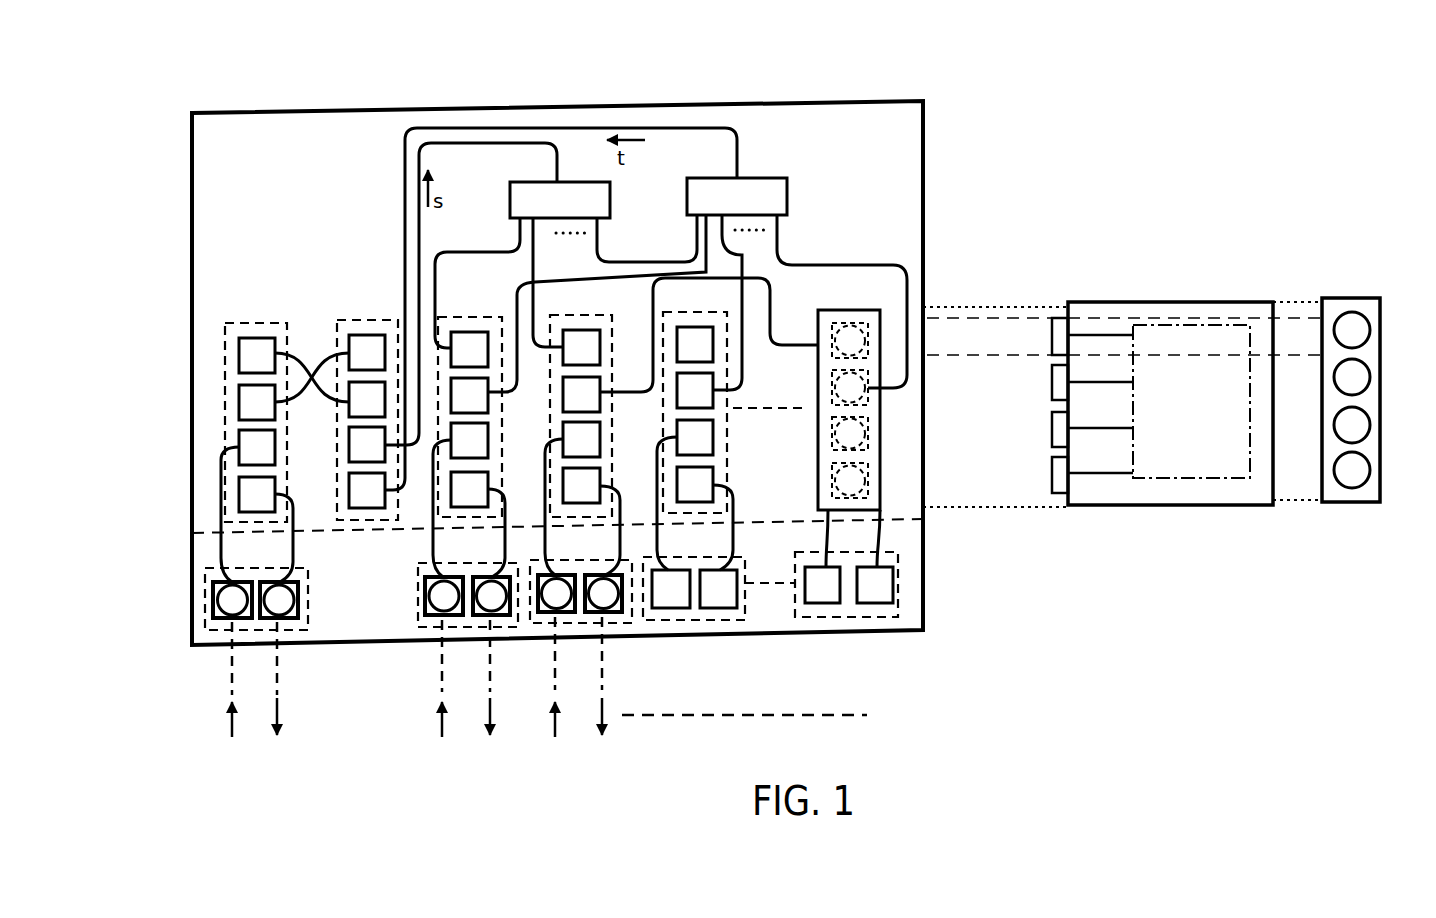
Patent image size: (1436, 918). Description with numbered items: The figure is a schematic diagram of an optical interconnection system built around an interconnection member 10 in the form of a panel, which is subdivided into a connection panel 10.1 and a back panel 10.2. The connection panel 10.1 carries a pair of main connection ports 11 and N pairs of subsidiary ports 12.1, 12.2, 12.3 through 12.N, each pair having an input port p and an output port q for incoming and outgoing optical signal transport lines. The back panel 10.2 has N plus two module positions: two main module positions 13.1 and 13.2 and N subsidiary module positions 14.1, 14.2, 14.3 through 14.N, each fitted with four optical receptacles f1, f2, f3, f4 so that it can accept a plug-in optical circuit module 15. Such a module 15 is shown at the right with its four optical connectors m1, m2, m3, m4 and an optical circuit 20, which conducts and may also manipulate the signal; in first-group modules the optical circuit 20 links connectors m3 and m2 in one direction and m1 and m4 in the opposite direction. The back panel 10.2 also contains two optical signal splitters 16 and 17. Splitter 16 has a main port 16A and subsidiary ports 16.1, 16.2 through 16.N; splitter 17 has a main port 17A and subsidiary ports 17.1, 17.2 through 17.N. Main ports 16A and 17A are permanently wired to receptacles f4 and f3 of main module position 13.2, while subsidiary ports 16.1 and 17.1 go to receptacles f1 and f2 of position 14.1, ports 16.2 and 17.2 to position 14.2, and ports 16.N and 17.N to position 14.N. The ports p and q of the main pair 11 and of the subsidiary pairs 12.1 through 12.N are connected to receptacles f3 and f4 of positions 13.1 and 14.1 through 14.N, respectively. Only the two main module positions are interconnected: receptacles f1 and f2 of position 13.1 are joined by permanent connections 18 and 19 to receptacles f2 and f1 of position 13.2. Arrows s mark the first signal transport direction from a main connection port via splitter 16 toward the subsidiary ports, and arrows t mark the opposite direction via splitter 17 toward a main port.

The interconnection member 10 is at (182, 175).
The connection panel 10.1 is at (205, 562).
The back panel 10.2 is at (220, 283).
The pair of main connection ports 11 is at (297, 633).
The pair of subsidiary ports 12.1 is at (438, 627).
The pair of subsidiary ports 12.2 is at (617, 623).
The pair of subsidiary ports 12.3 is at (687, 620).
The pair of subsidiary ports 12.N is at (812, 620).
The main module position 13.1 is at (225, 415).
The main module position 13.2 is at (360, 520).
The subsidiary module position 14.1 is at (500, 455).
The subsidiary module position 14.2 is at (637, 432).
The subsidiary module position 14.3 is at (727, 433).
The subsidiary module position 14.N is at (816, 322).
The plug-in optical circuit module 15 is at (1160, 302).
The optical signal splitter 16 is at (508, 198).
The optical signal splitter 17 is at (788, 190).
The main port of signal splitter 16A is at (512, 140).
The main port of signal splitter 17A is at (680, 125).
The subsidiary port of signal splitter 16.1 is at (487, 251).
The subsidiary port of signal splitter 16.2 is at (528, 269).
The subsidiary port of signal splitter 16.N is at (600, 262).
The subsidiary port of signal splitter 17.1 is at (693, 252).
The subsidiary port of signal splitter 17.2 is at (657, 302).
The subsidiary port of signal splitter 17.N is at (807, 251).
The permanent optical signal connection 18 is at (302, 357).
The permanent optical signal connection 19 is at (298, 402).
The optical circuit 20 is at (1170, 480).
The optical receptacle f1 is at (238, 353).
The optical receptacle f2 is at (238, 397).
The optical receptacle f3 is at (238, 442).
The optical receptacle f4 is at (238, 493).
The optical connector m1 is at (1052, 347).
The optical connector m2 is at (1052, 385).
The optical connector m3 is at (1052, 428).
The optical connector m4 is at (1052, 472).
The input port p is at (218, 623).
The output port q is at (268, 623).
The arrows indicating first signal transport direction s is at (409, 692).
The arrows indicating second signal transport direction t is at (572, 691).